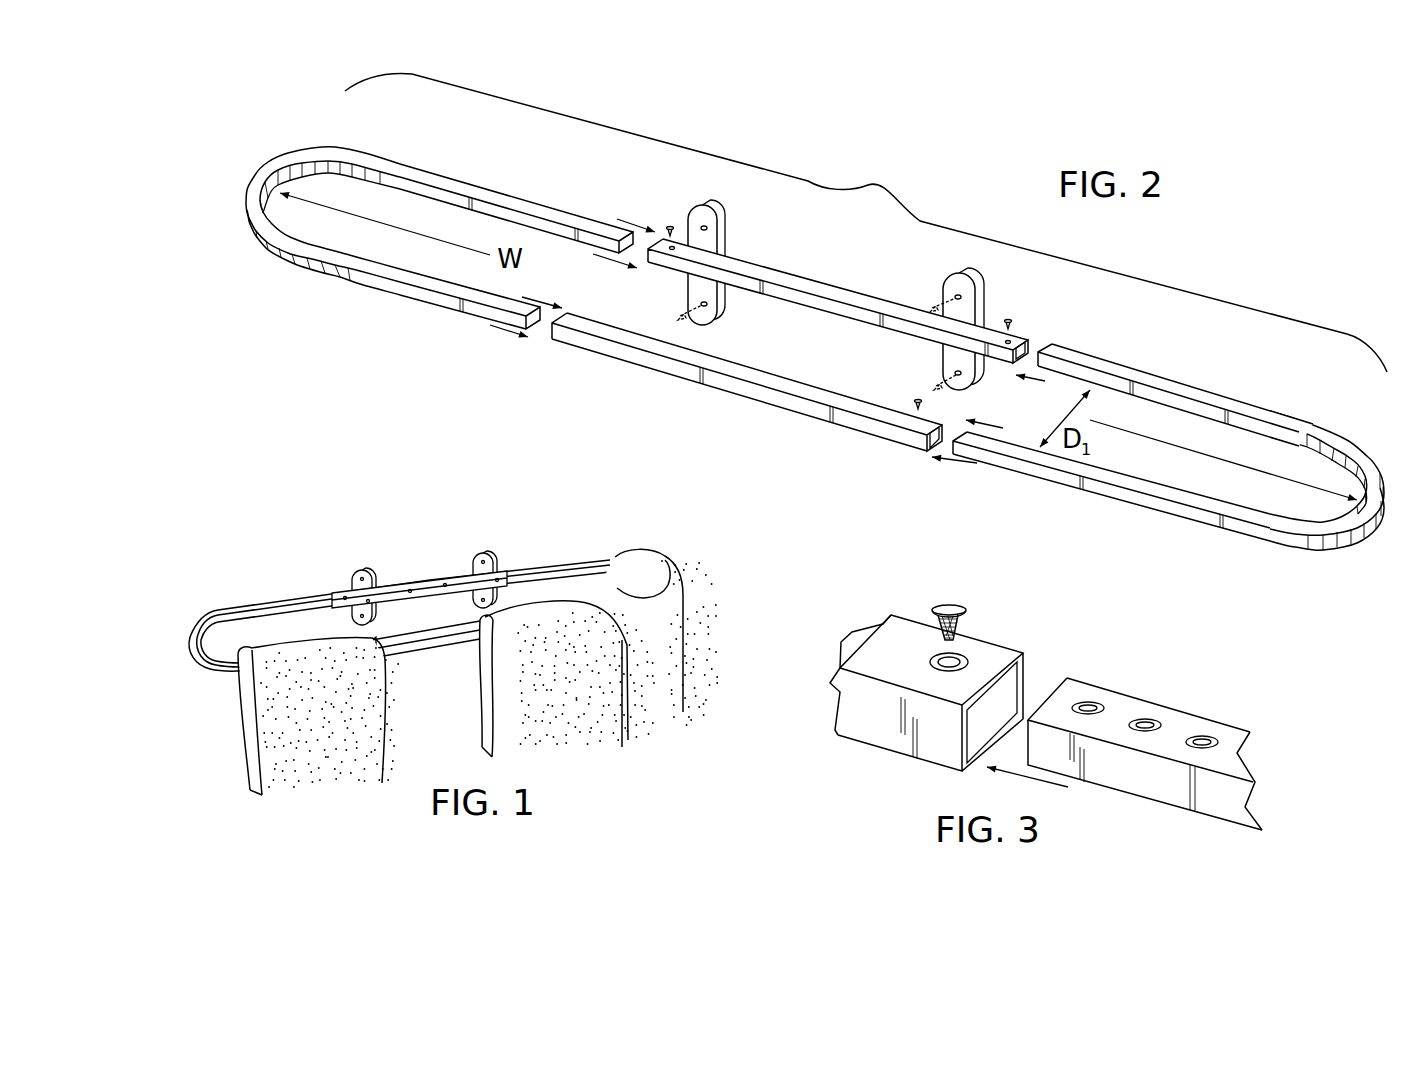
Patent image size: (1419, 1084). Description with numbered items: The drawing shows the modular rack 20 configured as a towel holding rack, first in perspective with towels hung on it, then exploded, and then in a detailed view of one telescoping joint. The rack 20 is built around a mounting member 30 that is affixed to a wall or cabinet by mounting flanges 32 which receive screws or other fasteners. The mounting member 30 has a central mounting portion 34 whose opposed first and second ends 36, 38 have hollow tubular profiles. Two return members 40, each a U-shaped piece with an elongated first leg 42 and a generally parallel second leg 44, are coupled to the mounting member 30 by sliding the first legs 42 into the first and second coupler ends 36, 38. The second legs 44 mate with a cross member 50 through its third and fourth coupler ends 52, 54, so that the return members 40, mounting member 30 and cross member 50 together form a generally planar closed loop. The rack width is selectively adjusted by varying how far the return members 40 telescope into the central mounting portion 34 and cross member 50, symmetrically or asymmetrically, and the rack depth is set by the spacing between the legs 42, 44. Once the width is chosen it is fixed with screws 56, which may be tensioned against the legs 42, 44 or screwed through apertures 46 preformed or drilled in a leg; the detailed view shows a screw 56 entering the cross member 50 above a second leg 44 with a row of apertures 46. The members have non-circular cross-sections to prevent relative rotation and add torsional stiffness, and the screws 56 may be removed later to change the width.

In FIG. 2, the rack 20 is at (870, 180).
In FIG. 1, the rack 20 is at (301, 572).
In FIG. 2, the mounting member 30 is at (893, 303).
In FIG. 2, the mounting flanges 32 is at (718, 231).
In FIG. 2, the central mounting portion 34 is at (840, 313).
In FIG. 2, the first end 36 is at (650, 228).
In FIG. 2, the second end 38 is at (1038, 336).
In FIG. 2, the return member 40 is at (268, 148).
In FIG. 2, the first leg 42 is at (512, 197).
In FIG. 2, the second leg 44 is at (425, 296).
In FIG. 3, the second leg 44 is at (1145, 753).
In FIG. 3, the apertures 46 is at (1095, 704).
In FIG. 2, the cross member 50 is at (758, 393).
In FIG. 3, the cross member 50 is at (953, 700).
In FIG. 2, the third coupler end 52 is at (554, 334).
In FIG. 2, the fourth coupler end 54 is at (946, 428).
In FIG. 3, the fourth coupler end 54 is at (995, 698).
In FIG. 2, the screws 56 is at (1012, 317).
In FIG. 3, the screws 56 is at (932, 607).